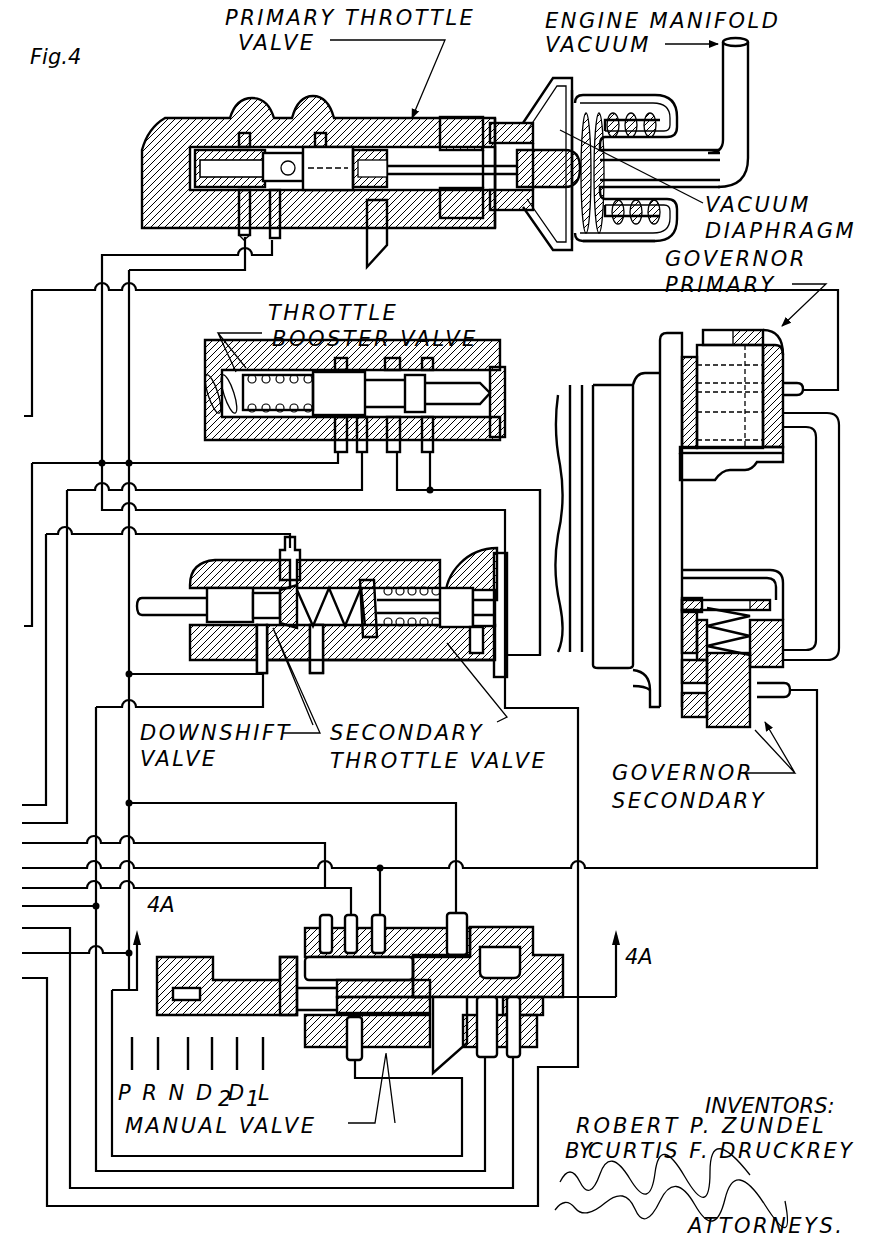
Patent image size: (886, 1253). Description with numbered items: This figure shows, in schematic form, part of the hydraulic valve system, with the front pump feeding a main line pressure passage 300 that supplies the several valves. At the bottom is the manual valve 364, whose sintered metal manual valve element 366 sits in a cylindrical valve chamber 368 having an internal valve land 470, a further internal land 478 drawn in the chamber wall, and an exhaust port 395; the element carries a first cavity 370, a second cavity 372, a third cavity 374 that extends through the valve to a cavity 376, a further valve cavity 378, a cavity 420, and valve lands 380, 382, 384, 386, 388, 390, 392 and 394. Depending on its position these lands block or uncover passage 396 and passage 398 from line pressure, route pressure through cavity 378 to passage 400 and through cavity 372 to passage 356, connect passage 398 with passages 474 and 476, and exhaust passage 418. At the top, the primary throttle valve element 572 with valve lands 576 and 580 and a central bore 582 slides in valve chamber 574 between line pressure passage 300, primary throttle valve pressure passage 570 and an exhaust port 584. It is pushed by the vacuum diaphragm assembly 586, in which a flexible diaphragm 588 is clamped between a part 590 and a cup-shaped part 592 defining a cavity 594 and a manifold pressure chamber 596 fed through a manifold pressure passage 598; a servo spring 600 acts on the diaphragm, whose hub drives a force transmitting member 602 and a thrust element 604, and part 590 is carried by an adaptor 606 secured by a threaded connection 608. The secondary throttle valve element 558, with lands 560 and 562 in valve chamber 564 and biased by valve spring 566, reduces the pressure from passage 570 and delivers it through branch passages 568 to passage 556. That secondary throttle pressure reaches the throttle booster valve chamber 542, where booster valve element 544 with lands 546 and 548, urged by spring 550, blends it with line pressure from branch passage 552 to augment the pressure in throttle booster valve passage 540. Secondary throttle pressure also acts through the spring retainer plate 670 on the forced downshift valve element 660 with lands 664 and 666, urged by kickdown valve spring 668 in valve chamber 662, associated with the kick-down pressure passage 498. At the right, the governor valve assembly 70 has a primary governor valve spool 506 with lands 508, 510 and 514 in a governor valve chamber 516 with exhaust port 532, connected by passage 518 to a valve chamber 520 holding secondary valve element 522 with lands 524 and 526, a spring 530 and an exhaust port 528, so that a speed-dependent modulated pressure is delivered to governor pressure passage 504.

The central bore 582 is at (205, 148).
The valve land 576 is at (222, 150).
The primary throttle valve element 572 is at (272, 155).
The primary throttle valve chamber 574 is at (305, 148).
The valve land 580 is at (345, 150).
The threaded connection 608 is at (455, 130).
The adaptor 606 is at (500, 125).
The thrust element 604 is at (445, 195).
The force transmitting member 602 is at (492, 205).
The main line pressure passage 300 is at (243, 236).
The primary throttle valve pressure passage 570 is at (278, 240).
The exhaust port 584 is at (368, 262).
The part 590 is at (577, 60).
The flexible diaphragm 588 is at (600, 106).
The cup-shaped part 592 is at (660, 100).
The cavity 594 is at (683, 140).
The manifold pressure passage 598 is at (746, 98).
The servo spring 600 is at (600, 190).
The manifold pressure chamber 596 is at (645, 248).
The vacuum diaphragm assembly 586 is at (540, 250).
The throttle booster valve chamber 542 is at (492, 370).
The spring 550 is at (213, 380).
The valve land 546 is at (280, 410).
The booster valve element 544 is at (333, 422).
The branch passage 552 is at (180, 463).
The valve land 548 is at (432, 426).
The secondary throttle valve pressure passage 556 is at (520, 490).
The valve land 510 is at (672, 392).
The exhaust port 532 is at (660, 350).
The valve land 508 is at (697, 446).
The primary governor valve spool 506 is at (712, 422).
The valve land 514 is at (746, 346).
The governor pressure passage 504 is at (56, 393).
The governor valve chamber 516 is at (785, 465).
The governor valve assembly 70 is at (790, 478).
The passage 518 is at (826, 535).
The spring 530 is at (730, 600).
The exhaust port 528 is at (682, 603).
The secondary valve element 522 is at (685, 625).
The valve land 526 is at (686, 642).
The valve land 524 is at (683, 703).
The valve chamber 520 is at (648, 686).
The passage 474 is at (786, 690).
The valve chamber 662 is at (205, 660).
The valve land 664 is at (215, 595).
The forced downshift valve element 660 is at (262, 590).
The valve land 666 is at (300, 570).
The kickdown valve spring 668 is at (340, 588).
The spring retainer plate 670 is at (370, 580).
The branch passages 568 is at (395, 640).
The valve land 560 is at (446, 590).
The valve land 562 is at (460, 590).
The valve chamber 564 is at (476, 652).
The valve spring 566 is at (422, 660).
The secondary throttle valve element 558 is at (507, 667).
The passage 400 is at (252, 674).
The forced down-shift pressure passage 498 is at (48, 603).
The throttle booster valve passage 540 is at (68, 678).
The passage 398 is at (292, 803).
The passage 418 is at (235, 846).
The passage 476 is at (200, 885).
The valve cavity 376 is at (398, 890).
The manual valve 364 is at (458, 882).
The cavity 420 is at (215, 957).
The third cavity 374 is at (290, 958).
The valve land 394 is at (295, 978).
The internal valve land 470 is at (359, 968).
The valve land 390 is at (402, 930).
The valve land 384 is at (468, 925).
The valve land 382 is at (540, 945).
The valve cavity 378 is at (515, 947).
The valve land 478 is at (440, 976).
The valve land 388 is at (398, 1027).
The cylindrical valve chamber 368 is at (322, 1038).
The valve land 392 is at (346, 1062).
The passage 396 is at (386, 1068).
The exhaust port 395 is at (420, 1078).
The manual valve element 366 is at (410, 1072).
The valve land 380 is at (545, 1008).
The second cavity 372 is at (582, 996).
The first cavity 370 is at (545, 1025).
The valve land 386 is at (540, 1045).
The passage 356 is at (530, 1070).